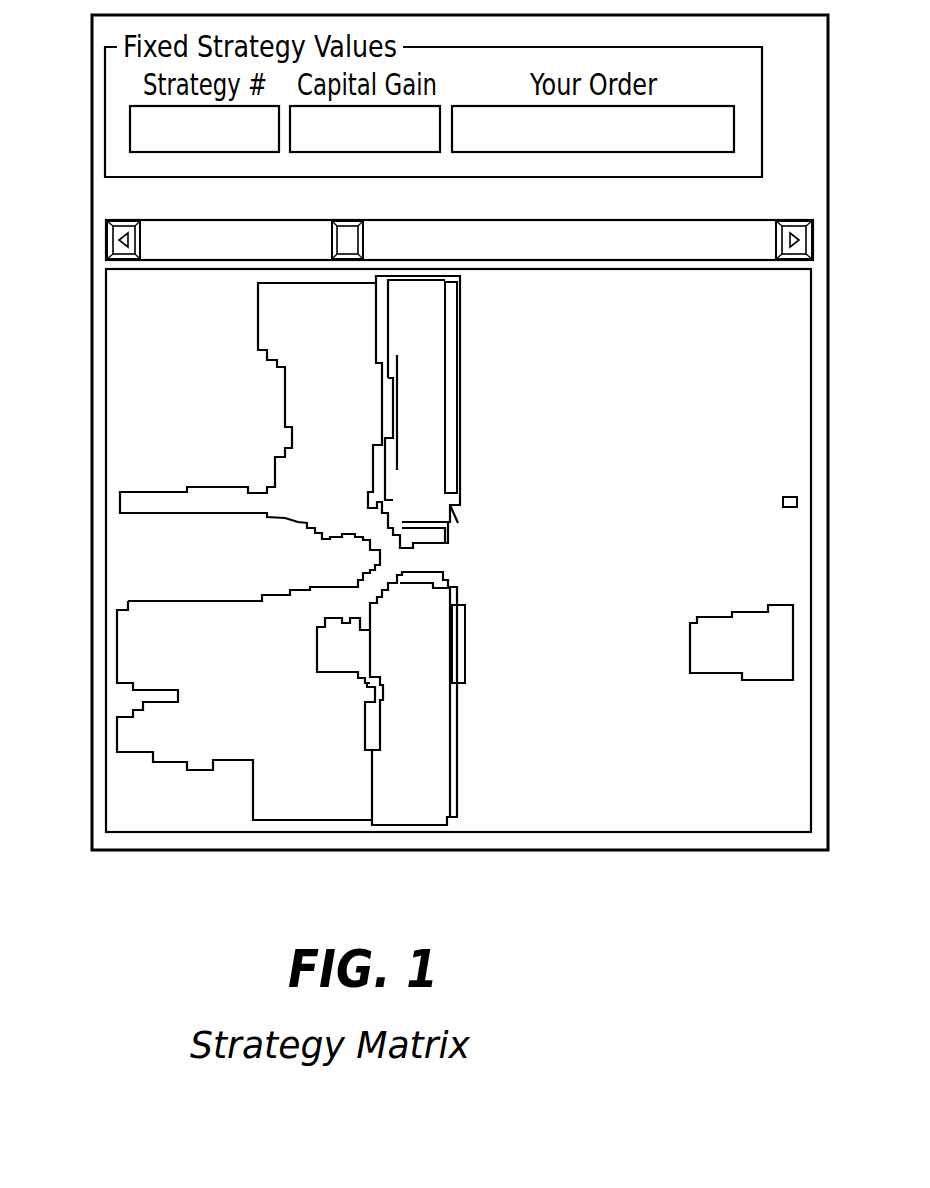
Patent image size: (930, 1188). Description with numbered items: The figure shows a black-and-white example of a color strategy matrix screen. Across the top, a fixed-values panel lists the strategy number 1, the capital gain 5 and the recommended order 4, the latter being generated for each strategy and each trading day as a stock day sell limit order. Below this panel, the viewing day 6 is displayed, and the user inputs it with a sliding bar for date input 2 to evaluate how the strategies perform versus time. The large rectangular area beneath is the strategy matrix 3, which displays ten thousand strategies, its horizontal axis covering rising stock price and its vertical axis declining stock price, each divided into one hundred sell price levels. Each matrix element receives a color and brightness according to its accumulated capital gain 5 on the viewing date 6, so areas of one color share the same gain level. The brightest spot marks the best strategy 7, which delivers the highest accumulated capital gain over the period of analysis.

The strategy number 1 is at (130, 133).
The capital gain 5 is at (302, 147).
The recommended order 4 is at (492, 152).
The sliding bar for date input 2 is at (347, 240).
The viewing day 6 is at (517, 212).
The strategy matrix 3 is at (146, 499).
The best strategy 7 is at (370, 645).